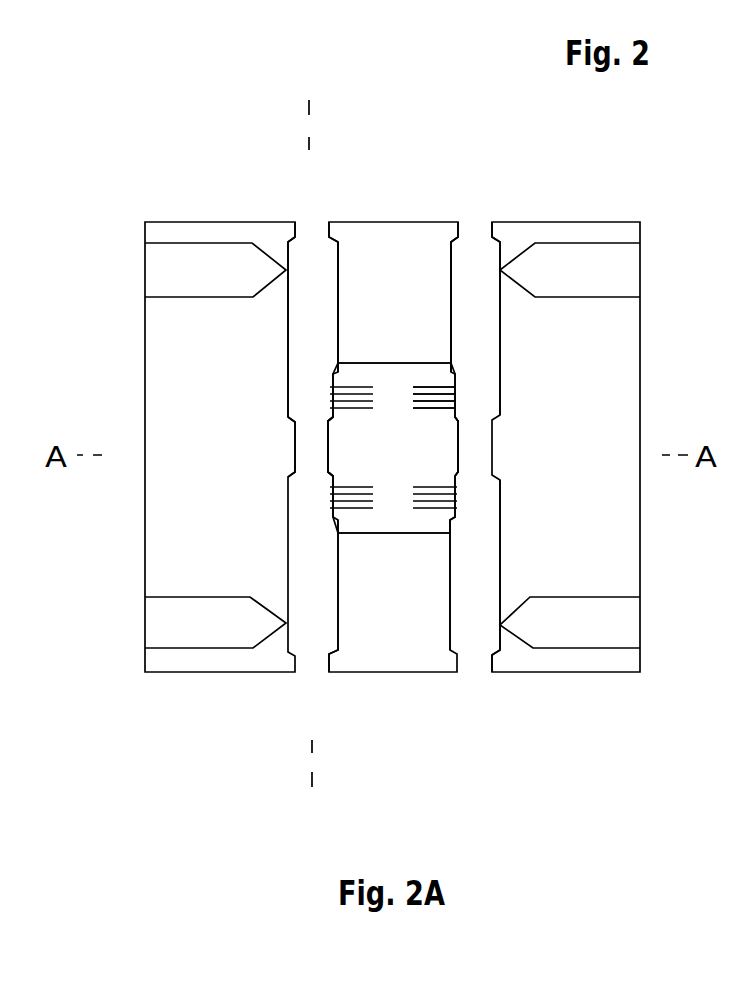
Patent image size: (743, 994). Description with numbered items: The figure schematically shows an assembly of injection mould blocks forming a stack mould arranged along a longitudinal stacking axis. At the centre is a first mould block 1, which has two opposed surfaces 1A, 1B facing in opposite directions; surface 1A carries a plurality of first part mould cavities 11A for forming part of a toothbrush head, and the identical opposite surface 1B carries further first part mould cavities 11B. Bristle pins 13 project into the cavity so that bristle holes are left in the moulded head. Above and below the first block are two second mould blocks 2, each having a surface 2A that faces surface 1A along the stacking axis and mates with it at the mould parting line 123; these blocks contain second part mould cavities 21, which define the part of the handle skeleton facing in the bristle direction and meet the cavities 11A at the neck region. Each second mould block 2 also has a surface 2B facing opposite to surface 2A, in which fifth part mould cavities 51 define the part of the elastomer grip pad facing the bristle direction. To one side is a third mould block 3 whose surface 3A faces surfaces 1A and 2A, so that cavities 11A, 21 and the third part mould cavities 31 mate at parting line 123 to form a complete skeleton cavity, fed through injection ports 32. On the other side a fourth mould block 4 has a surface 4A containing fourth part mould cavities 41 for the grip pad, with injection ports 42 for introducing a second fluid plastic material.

The first mould block 1 is at (393, 448).
The surface 1A is at (327, 443).
The opposite surface 1B is at (460, 445).
The second mould block 2 is at (393, 447).
The surface 2A is at (282, 750).
The surface 2B is at (458, 232).
The third mould block 3 is at (220, 447).
The surface 3A is at (293, 437).
The fourth mould block 4 is at (566, 447).
The surface 4A is at (487, 657).
The first part mould cavities 11A is at (330, 516).
The further first part mould cavities 11B is at (455, 418).
The bristle pins 13 is at (447, 386).
The second part mould cavities 21 is at (337, 297).
The third part mould cavities 31 is at (287, 308).
The injection ports 32 is at (215, 445).
The fourth part mould cavities 41 is at (500, 337).
The injection ports 42 is at (570, 445).
The fifth part mould cavities 51 is at (452, 625).
The mould parting line 123 is at (312, 447).